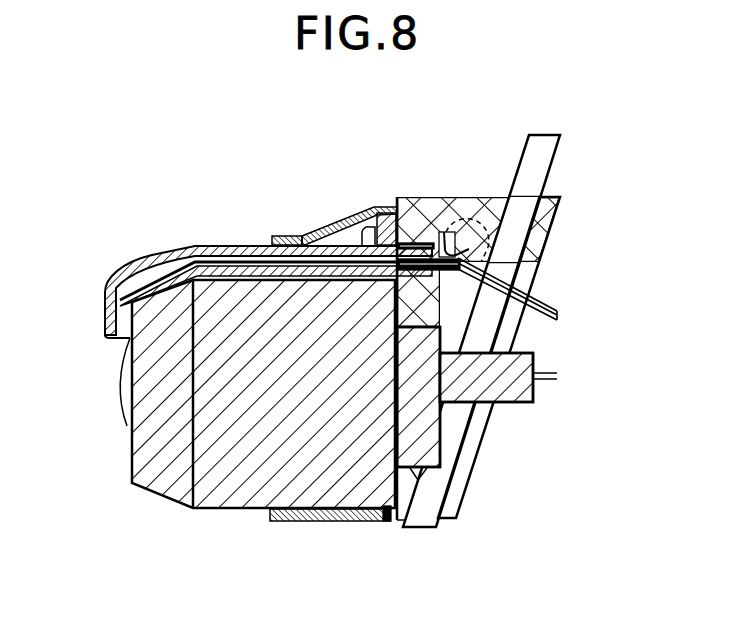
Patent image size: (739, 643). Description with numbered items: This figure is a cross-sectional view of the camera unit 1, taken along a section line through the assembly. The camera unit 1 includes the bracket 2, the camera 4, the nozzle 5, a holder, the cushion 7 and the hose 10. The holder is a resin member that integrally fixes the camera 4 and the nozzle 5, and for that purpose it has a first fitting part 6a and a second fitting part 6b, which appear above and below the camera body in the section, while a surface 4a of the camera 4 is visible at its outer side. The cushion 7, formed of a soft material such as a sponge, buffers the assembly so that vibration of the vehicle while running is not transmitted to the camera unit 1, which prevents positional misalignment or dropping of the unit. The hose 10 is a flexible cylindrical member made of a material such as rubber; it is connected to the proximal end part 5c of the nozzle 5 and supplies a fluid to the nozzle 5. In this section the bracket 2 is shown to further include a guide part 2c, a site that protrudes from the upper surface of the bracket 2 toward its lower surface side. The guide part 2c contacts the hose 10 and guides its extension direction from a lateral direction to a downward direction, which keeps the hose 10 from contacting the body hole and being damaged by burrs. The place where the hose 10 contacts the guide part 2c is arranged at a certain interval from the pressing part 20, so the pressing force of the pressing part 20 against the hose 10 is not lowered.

The camera unit 1 is at (114, 168).
The bracket 2 is at (423, 508).
The guide part 2c is at (478, 205).
The camera 4 is at (232, 478).
The side surface of body 4a is at (127, 426).
The nozzle 5 is at (240, 247).
The proximal end part 5c is at (428, 256).
The first fitting part 6a is at (305, 240).
The second fitting part 6b is at (338, 522).
The cushion 7 is at (545, 218).
The hose 10 is at (557, 387).
The pressing part 20 is at (452, 234).